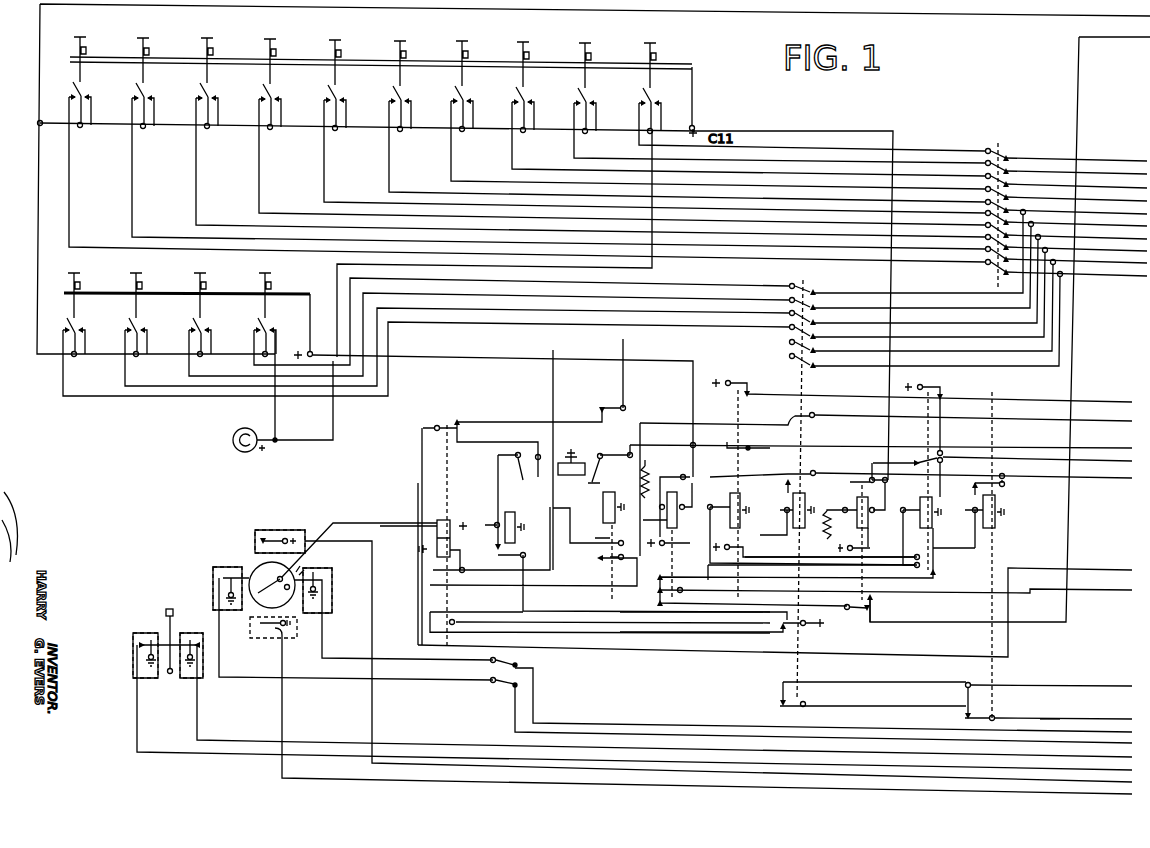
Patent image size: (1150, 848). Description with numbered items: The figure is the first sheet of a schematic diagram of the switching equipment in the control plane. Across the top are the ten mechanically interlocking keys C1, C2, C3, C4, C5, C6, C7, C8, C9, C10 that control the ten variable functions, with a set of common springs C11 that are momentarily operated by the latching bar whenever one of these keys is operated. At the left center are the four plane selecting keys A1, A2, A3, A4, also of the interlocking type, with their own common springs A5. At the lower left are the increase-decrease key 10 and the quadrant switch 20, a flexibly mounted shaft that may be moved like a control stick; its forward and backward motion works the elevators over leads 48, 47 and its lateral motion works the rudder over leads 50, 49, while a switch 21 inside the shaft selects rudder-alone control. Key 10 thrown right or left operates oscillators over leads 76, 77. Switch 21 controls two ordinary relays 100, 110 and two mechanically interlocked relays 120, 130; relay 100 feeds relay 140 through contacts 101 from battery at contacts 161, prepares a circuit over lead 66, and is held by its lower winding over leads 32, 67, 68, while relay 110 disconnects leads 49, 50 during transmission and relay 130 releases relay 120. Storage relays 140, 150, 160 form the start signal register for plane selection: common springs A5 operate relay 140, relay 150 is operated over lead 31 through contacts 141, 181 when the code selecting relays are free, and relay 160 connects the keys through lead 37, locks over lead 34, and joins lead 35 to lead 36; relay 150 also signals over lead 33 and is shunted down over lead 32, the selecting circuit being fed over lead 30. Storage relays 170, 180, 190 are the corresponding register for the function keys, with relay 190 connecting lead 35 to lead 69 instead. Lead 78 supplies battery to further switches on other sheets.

The increase-decrease key 10 is at (167, 626).
The quadrant switch 20 is at (258, 568).
The switch 21 is at (255, 601).
The lead 30 is at (40, 125).
The lead 31 is at (1122, 578).
The lead 32 is at (1132, 460).
The lead 33 is at (1128, 393).
The lead 34 is at (1132, 480).
The lead 35 is at (1122, 674).
The lead 36 is at (1122, 696).
The lead 37 is at (1108, 250).
The lead 47 is at (282, 710).
The lead 48 is at (372, 710).
The lead 49 is at (513, 713).
The lead 50 is at (535, 713).
The lead 66 is at (1122, 558).
The lead 67 is at (1128, 434).
The lead 68 is at (1128, 410).
The lead 69 is at (1056, 718).
The lead 76 is at (197, 710).
The lead 77 is at (137, 710).
The lead 78 is at (1133, 28).
The relay 100 is at (452, 515).
The contacts of relay 100 101 is at (430, 628).
The relay 110 is at (600, 533).
The relay 120 is at (592, 463).
The relay 130 is at (603, 505).
The storage relay 140 is at (666, 522).
The contacts of relay 140 141 is at (663, 591).
The storage relay 150 is at (814, 495).
The storage relay 160 is at (808, 485).
The contacts of relay 160 161 is at (790, 625).
The storage relay 170 is at (861, 531).
The storage relay 180 is at (938, 479).
The contacts of relay 180 181 is at (936, 572).
The storage relay 190 is at (995, 526).
The key C1 is at (84, 133).
The key C2 is at (147, 134).
The key C3 is at (211, 134).
The key C4 is at (274, 135).
The key C5 is at (339, 136).
The key C6 is at (404, 137).
The key C7 is at (466, 137).
The key C8 is at (527, 138).
The key C9 is at (589, 138).
The key C10 is at (654, 135).
The common springs C11 is at (792, 307).
The key A1 is at (76, 360).
The key A2 is at (138, 360).
The key A3 is at (203, 360).
The key A4 is at (266, 392).
The common springs A5 is at (313, 362).